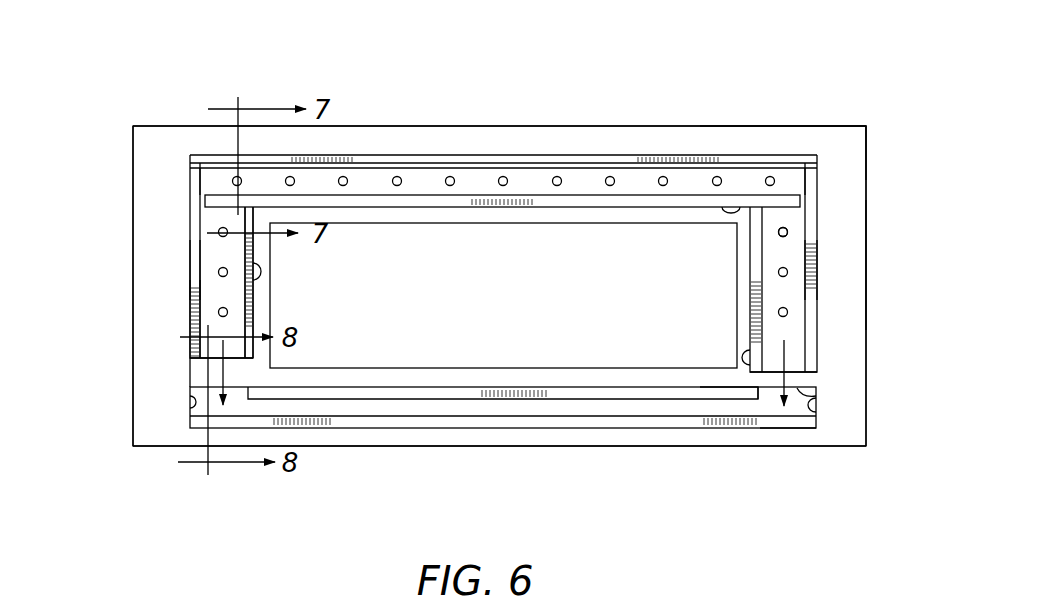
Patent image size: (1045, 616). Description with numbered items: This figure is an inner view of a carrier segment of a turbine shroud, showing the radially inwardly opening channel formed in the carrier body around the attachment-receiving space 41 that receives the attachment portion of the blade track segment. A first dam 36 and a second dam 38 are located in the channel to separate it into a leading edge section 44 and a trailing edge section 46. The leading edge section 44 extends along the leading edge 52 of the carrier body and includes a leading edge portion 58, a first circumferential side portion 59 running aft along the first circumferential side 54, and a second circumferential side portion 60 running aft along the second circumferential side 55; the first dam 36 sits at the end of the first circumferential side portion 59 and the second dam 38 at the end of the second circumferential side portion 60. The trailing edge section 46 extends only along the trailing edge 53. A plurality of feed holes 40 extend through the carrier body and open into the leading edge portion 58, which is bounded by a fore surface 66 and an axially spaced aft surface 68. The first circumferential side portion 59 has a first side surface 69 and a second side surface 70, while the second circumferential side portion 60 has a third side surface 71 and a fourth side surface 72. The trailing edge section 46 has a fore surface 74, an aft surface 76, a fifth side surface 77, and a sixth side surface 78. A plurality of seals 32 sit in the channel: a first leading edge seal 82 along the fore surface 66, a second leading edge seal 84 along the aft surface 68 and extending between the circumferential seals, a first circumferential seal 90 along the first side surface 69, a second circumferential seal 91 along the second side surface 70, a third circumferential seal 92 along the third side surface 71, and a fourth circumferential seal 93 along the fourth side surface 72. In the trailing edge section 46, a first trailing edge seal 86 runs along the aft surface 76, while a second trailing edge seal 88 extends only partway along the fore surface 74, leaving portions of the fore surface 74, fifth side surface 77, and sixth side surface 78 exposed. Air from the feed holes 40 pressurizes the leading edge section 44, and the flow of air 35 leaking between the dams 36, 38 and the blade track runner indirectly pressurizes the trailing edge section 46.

The seals 32 is at (842, 151).
The leading edge 52 is at (510, 120).
The leading edge section 44 is at (762, 140).
The first circumferential side 54 is at (114, 267).
The trailing edge 53 is at (318, 449).
The second circumferential side 55 is at (878, 247).
The third side surface 71 is at (817, 290).
The feed holes 40 is at (347, 163).
The fore surface 66 is at (692, 156).
The first leading edge seal 82 is at (413, 152).
The leading edge portion 58 is at (633, 181).
The second leading edge seal 84 is at (478, 192).
The aft surface 68 is at (740, 207).
The attachment-receiving space 41 is at (486, 308).
The first circumferential side portion 59 is at (213, 212).
The first circumferential seal 90 is at (186, 311).
The first side surface 69 is at (187, 273).
The second circumferential seal 91 is at (238, 247).
The second side surface 70 is at (255, 264).
The second circumferential side portion 60 is at (802, 229).
The fourth circumferential seal 93 is at (793, 237).
The third circumferential seal 92 is at (822, 323).
The fourth side surface 72 is at (753, 364).
The first trailing edge seal 86 is at (402, 430).
The second trailing edge seal 88 is at (486, 402).
The trailing edge section 46 is at (696, 432).
The second dam 38 is at (752, 382).
The aft surface 76 is at (784, 429).
The fore surface 74 is at (818, 392).
The sixth side surface 78 is at (815, 410).
The fifth side surface 77 is at (192, 400).
The first dam 36 is at (190, 378).
The flow of air 35 is at (222, 359).